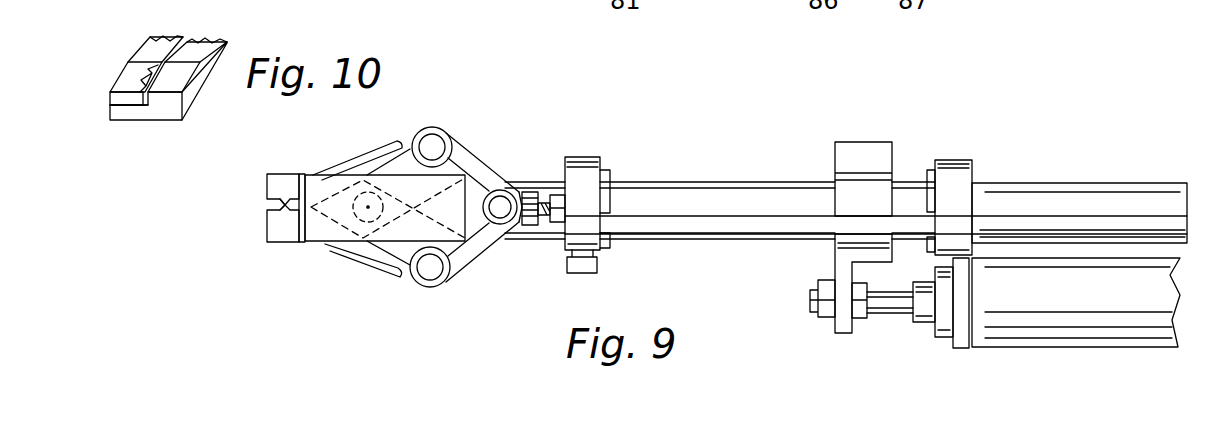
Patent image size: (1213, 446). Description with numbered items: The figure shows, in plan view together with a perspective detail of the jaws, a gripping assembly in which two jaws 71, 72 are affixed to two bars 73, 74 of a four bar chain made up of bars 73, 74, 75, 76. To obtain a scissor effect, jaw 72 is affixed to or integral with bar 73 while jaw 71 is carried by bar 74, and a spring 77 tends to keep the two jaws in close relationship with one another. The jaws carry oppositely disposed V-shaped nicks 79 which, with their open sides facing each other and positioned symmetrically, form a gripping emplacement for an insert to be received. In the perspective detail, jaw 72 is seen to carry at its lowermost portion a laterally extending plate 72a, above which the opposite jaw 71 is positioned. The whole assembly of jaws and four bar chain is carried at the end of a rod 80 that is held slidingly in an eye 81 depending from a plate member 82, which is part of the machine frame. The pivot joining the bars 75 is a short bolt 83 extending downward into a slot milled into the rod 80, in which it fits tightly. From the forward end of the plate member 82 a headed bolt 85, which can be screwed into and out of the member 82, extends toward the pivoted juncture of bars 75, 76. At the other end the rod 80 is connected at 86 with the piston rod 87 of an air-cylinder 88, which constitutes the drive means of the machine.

In FIG. 10, the jaw 71 is at (125, 78).
In FIG. 9, the jaw 71 is at (268, 182).
In FIG. 10, the jaw 72 is at (170, 107).
In FIG. 9, the jaw 72 is at (268, 226).
In FIG. 10, the laterally extending plate 72a is at (110, 114).
In FIG. 9, the bar 73 is at (398, 164).
In FIG. 9, the bar 74 is at (394, 252).
In FIG. 9, the bar 75 is at (478, 170).
In FIG. 9, the bar 76 is at (476, 258).
In FIG. 9, the spring 77 is at (334, 168).
In FIG. 9, the V-shaped nick 79 is at (272, 206).
In FIG. 9, the rod 80 is at (686, 199).
In FIG. 9, the eye 81 is at (607, 243).
In FIG. 9, the plate member 82 is at (703, 225).
In FIG. 9, the pivot / short bolt 83 is at (500, 203).
In FIG. 9, the headed bolt 85 is at (543, 216).
In FIG. 9, the connection 86 is at (873, 303).
In FIG. 9, the piston rod 87 is at (898, 303).
In FIG. 9, the air-cylinder 88 is at (1092, 308).